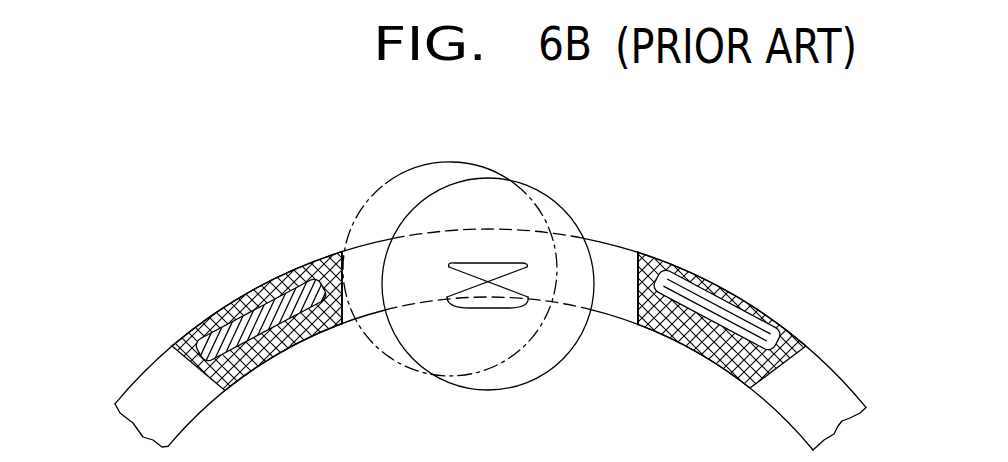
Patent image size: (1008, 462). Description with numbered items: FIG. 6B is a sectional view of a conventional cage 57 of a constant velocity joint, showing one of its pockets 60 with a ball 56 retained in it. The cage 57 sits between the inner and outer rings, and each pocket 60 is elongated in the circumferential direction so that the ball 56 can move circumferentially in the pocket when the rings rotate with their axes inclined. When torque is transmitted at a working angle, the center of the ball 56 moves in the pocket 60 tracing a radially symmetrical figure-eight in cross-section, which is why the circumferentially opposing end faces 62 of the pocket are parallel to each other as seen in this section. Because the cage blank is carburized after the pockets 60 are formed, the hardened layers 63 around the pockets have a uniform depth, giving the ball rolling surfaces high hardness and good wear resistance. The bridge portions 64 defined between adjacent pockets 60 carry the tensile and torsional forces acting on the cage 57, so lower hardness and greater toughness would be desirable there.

The ball 56 is at (543, 362).
The cage 57 is at (487, 292).
The pocket 60 is at (603, 248).
The circumferentially opposing end face 62 is at (343, 272).
The hardened layer 63 is at (293, 344).
The bridge portion 64 is at (237, 313).